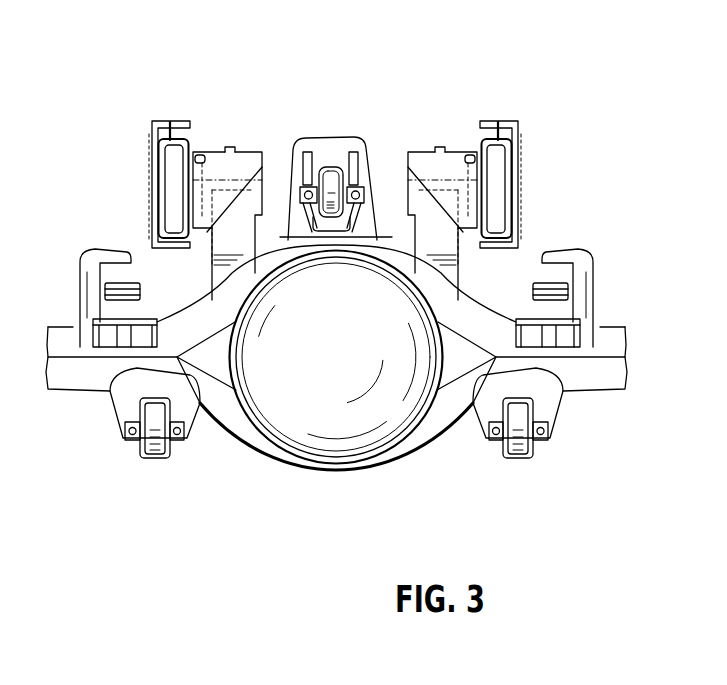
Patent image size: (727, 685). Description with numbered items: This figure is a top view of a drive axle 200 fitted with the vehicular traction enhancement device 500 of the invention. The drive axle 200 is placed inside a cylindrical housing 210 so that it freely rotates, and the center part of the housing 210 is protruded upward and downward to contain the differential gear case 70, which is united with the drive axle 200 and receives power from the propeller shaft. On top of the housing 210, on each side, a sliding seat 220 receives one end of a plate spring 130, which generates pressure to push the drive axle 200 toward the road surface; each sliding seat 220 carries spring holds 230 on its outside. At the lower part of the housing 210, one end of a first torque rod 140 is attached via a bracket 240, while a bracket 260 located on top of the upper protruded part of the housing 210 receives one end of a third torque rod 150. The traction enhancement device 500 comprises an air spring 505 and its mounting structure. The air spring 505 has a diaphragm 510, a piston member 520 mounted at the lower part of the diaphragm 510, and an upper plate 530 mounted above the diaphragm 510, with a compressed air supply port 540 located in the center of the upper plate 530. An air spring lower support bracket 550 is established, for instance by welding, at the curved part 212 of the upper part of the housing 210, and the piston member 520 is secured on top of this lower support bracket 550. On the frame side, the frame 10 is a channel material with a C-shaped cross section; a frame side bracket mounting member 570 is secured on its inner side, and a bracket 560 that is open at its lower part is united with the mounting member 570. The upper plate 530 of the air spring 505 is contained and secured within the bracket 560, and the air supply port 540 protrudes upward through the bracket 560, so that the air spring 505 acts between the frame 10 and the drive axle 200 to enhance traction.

The frame 10 is at (157, 128).
The differential gear case 70 is at (345, 357).
The plate spring 130 is at (131, 282).
The first torque rod 140 is at (163, 448).
The third torque rod 150 is at (329, 168).
The drive axle 200 is at (420, 460).
The housing 210 is at (240, 427).
The curved part 212 is at (247, 276).
The sliding seat 220 is at (138, 316).
The spring holds 230 is at (595, 282).
The bracket 240 is at (120, 402).
The bracket 260 is at (350, 161).
The vehicular traction enhancement device 500 is at (228, 160).
The air spring 505 is at (464, 179).
The diaphragm 510 is at (262, 186).
The piston member 520 is at (213, 243).
The upper plate 530 is at (213, 150).
The compressed air supply port 540 is at (231, 149).
The air spring lower support bracket 550 is at (455, 265).
The bracket 560 is at (453, 147).
The frame side bracket mounting member 570 is at (170, 126).